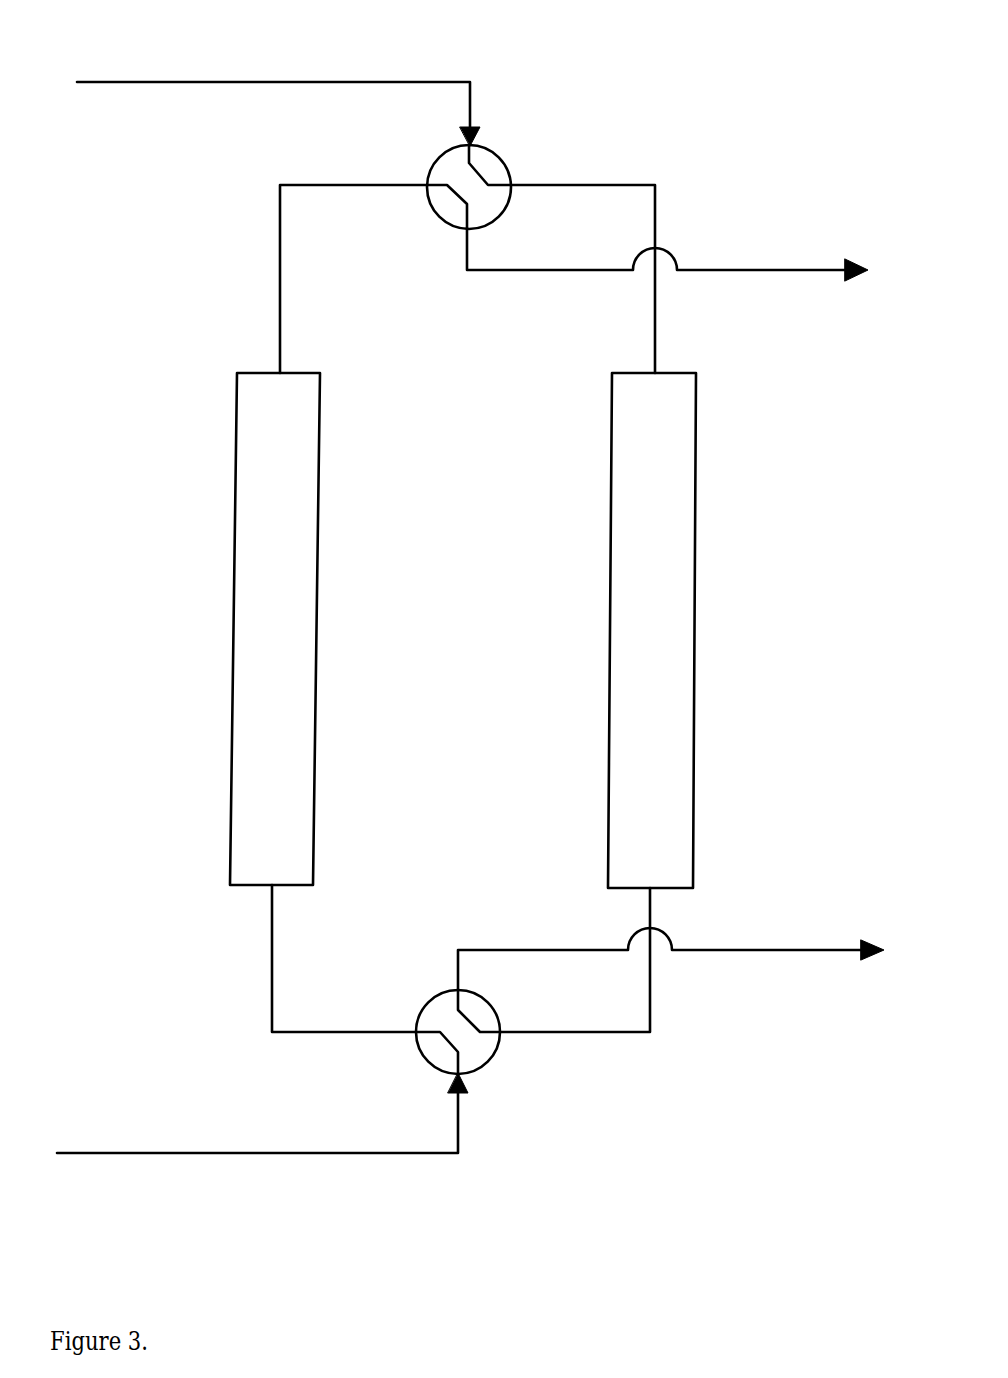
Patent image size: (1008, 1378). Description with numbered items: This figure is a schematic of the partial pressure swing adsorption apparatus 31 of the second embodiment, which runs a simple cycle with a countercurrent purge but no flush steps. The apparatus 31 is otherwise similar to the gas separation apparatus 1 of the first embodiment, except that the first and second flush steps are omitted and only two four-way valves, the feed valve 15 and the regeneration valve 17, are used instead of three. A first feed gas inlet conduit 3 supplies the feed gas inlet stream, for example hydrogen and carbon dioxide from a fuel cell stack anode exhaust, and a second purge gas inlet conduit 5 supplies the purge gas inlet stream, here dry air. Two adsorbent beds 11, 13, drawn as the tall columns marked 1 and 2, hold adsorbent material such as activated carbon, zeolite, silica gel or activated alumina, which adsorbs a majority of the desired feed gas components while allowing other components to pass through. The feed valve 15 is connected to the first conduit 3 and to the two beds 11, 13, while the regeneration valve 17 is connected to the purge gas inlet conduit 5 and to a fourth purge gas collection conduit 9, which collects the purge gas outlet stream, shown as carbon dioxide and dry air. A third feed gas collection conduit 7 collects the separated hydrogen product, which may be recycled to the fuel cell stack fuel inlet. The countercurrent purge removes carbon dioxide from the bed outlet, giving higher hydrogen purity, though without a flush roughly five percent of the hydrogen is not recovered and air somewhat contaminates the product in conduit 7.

The gas separation apparatus 1 is at (230, 720).
The second column 2 is at (702, 708).
The first feed gas inlet conduit 3 is at (317, 1155).
The second purge gas inlet conduit 5 is at (362, 82).
The third feed gas collection conduit 7 is at (752, 273).
The fourth purge gas collection conduit 9 is at (752, 952).
The adsorbent bed 11 is at (235, 629).
The adsorbent bed 13 is at (690, 630).
The feed valve 15 is at (425, 1002).
The regeneration valve 17 is at (438, 210).
The apparatus 31 is at (772, 72).